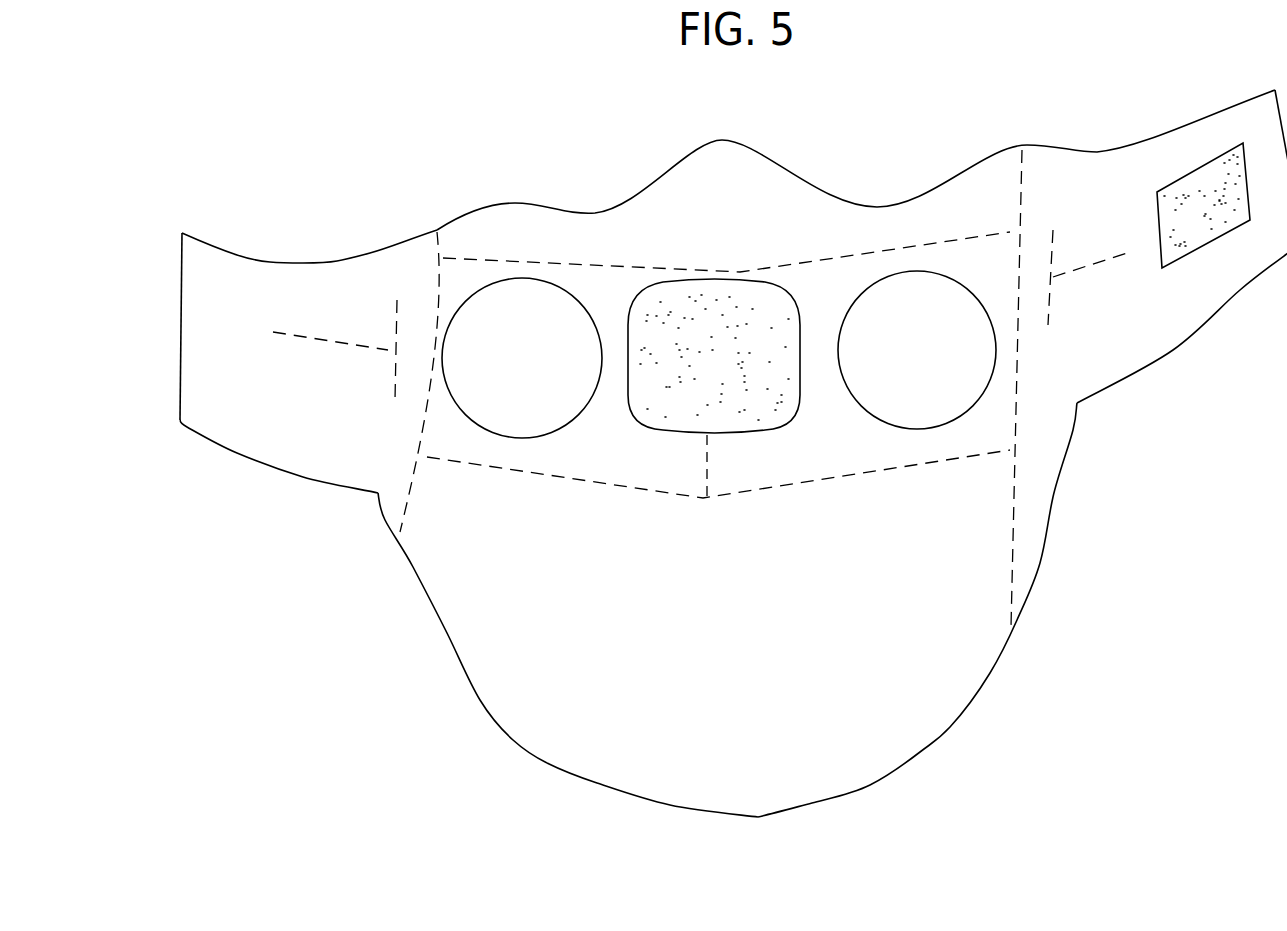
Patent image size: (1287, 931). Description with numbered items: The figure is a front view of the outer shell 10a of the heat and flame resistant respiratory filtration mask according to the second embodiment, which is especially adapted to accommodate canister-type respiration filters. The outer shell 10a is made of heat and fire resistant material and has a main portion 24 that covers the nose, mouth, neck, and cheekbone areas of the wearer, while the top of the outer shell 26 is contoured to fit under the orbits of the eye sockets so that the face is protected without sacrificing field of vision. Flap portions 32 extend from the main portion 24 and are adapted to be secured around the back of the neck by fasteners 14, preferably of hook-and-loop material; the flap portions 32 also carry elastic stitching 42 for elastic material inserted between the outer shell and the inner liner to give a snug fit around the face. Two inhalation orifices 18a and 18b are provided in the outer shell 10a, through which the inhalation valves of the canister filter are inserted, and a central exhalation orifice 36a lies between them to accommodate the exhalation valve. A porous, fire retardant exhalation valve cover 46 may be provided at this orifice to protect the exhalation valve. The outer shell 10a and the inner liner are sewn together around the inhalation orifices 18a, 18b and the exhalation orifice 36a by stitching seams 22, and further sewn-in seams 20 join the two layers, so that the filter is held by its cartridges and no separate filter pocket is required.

The outer shell 10a is at (490, 643).
The fastener 14 is at (1193, 255).
The inhalation orifice 18a is at (512, 278).
The inhalation orifice 18b is at (985, 405).
The sewn-in seams 20 is at (800, 278).
The stitching seams 22 is at (434, 262).
The main portion 24 is at (755, 817).
The top of the outer shell 26 is at (778, 165).
The flap portion 32 is at (288, 262).
The central exhalation orifice 36a is at (786, 421).
The elastic stitching 42 is at (314, 340).
The exhalation valve cover 46 is at (678, 432).